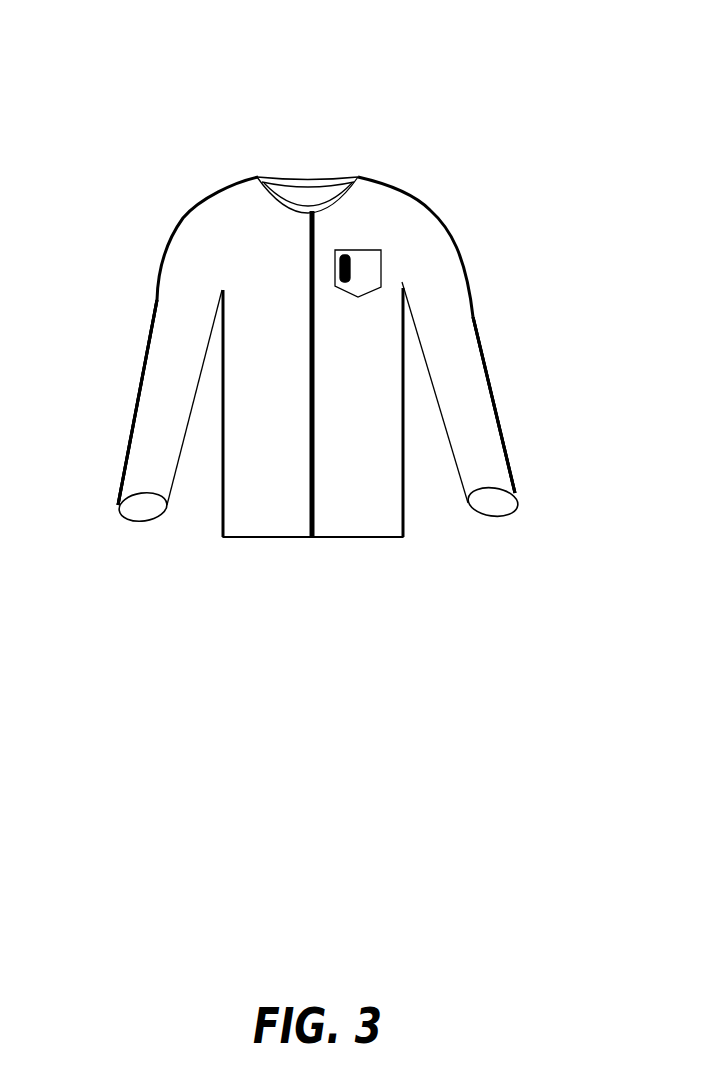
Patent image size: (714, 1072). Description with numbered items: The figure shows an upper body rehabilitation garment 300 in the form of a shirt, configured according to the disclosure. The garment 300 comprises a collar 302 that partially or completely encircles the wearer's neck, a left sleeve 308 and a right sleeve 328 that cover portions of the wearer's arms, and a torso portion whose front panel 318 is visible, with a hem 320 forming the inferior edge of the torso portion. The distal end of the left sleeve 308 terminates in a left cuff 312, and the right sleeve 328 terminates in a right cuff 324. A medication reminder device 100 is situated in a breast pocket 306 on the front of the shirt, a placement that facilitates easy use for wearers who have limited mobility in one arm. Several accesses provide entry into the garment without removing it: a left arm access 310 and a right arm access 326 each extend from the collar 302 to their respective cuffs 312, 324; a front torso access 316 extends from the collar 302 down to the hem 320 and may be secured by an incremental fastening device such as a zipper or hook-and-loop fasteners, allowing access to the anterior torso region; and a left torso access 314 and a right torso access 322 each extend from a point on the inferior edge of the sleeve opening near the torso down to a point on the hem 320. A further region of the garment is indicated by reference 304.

The garment 300 is at (178, 173).
The collar 302 is at (300, 181).
The medication reminder device 100 is at (347, 250).
The torso portion 304 is at (387, 213).
The breast pocket 306 is at (372, 273).
The left sleeve 308 is at (453, 368).
The left arm access 310 is at (492, 395).
The left cuff 312 is at (492, 514).
The left torso access 314 is at (408, 498).
The front torso access 316 is at (317, 452).
The front panel 318 is at (290, 520).
The hem 320 is at (262, 538).
The right torso access 322 is at (220, 520).
The right cuff 324 is at (130, 518).
The right arm access 326 is at (125, 448).
The right sleeve 328 is at (165, 406).